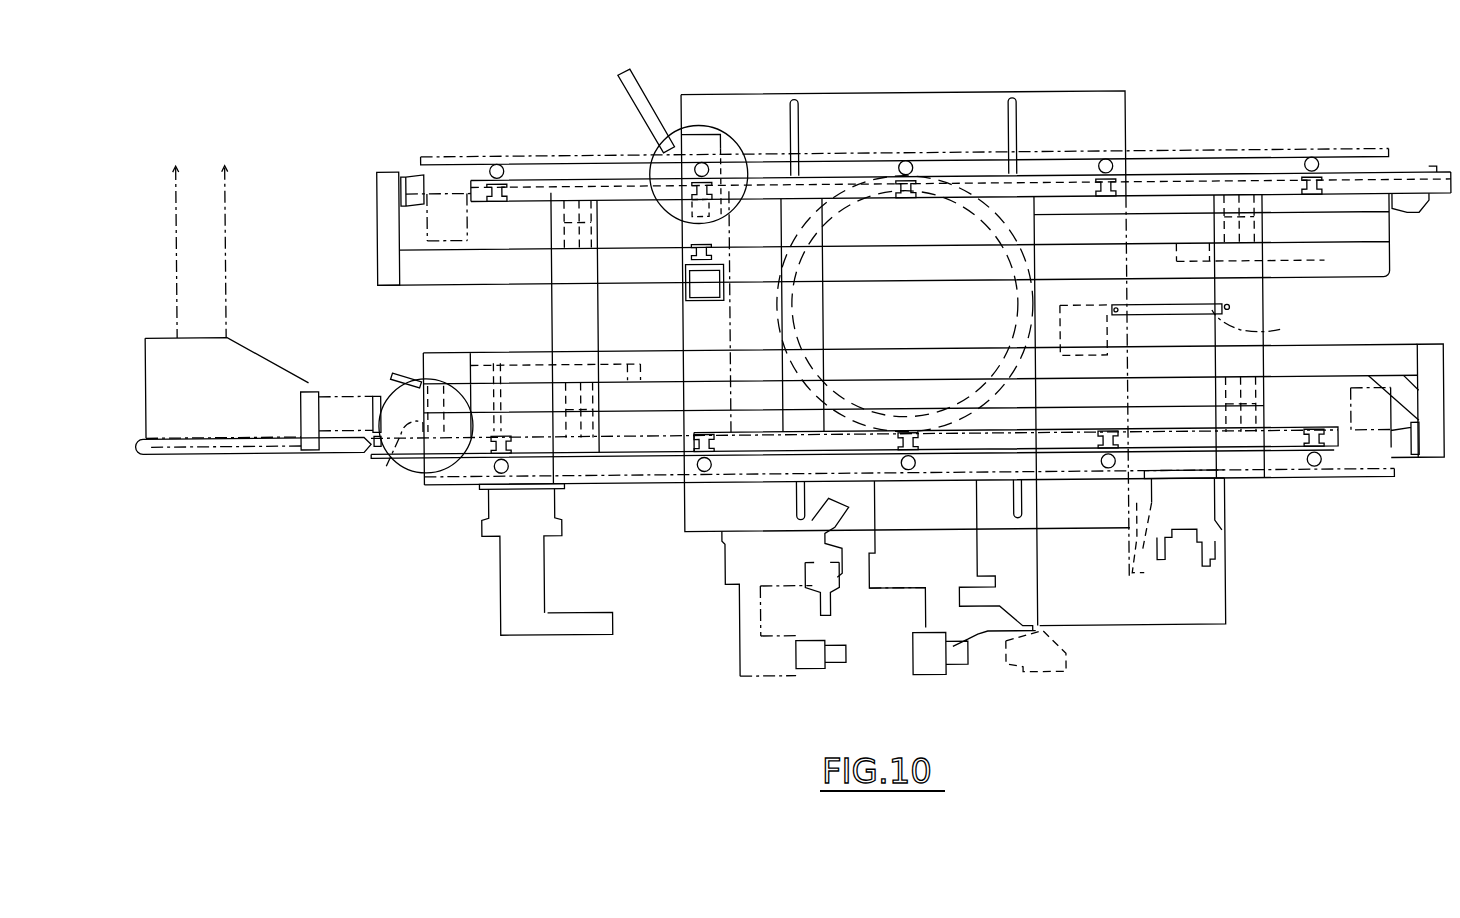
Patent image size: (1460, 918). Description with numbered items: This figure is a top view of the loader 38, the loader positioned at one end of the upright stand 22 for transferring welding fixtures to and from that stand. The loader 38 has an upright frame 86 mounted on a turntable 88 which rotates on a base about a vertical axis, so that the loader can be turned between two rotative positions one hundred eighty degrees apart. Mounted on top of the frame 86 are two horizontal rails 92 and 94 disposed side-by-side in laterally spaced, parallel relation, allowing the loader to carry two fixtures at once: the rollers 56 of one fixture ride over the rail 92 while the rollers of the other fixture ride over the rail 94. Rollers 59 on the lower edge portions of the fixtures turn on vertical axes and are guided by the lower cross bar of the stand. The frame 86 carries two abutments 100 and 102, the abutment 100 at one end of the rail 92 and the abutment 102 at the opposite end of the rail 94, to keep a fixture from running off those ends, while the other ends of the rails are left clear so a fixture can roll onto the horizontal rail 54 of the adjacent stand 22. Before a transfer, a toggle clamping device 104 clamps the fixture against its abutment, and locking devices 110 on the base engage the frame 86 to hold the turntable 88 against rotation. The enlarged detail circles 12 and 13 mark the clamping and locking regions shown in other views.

The detail circle 12 is at (400, 467).
The detail circle 13 is at (733, 132).
The upright stand 22 is at (255, 347).
The loader 38 is at (1297, 486).
The horizontal rail 54 is at (250, 452).
The rollers 56 is at (1122, 196).
The rollers 59 is at (1100, 166).
The upright frame 86 is at (1257, 318).
The turntable 88 is at (793, 318).
The horizontal rail 92 is at (1185, 195).
The horizontal rail 94 is at (1283, 446).
The abutment 100 is at (412, 178).
The abutment 102 is at (1407, 464).
The toggle clamping device 104 is at (414, 363).
The locking device 110 is at (643, 92).